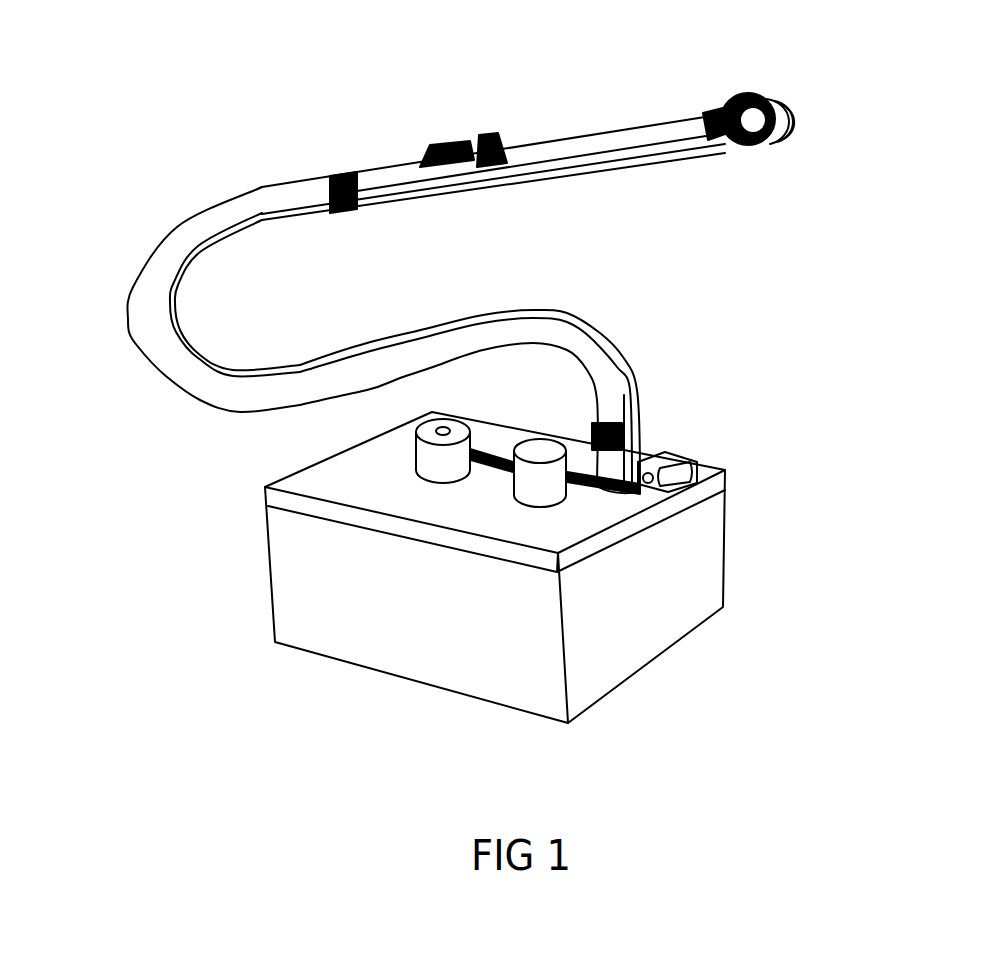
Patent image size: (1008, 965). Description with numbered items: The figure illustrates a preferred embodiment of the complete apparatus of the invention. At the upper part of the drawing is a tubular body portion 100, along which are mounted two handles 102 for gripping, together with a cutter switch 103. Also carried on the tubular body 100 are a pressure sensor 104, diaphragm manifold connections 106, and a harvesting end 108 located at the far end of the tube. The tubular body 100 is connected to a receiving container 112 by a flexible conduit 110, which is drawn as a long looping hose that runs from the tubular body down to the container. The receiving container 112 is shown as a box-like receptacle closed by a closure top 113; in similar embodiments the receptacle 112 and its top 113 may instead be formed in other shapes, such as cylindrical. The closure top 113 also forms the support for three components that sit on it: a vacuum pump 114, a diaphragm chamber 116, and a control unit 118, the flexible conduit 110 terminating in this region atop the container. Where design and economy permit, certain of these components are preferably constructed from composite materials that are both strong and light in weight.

The tubular body portion 100 is at (613, 130).
The handles 102 is at (437, 145).
The cutter switch 103 is at (490, 155).
The pressure sensor 104 is at (707, 110).
The diaphragm manifold connections 106 is at (740, 95).
The harvesting end 108 is at (781, 142).
The flexible conduit 110 is at (133, 342).
The receiving container 112 is at (268, 578).
The closure top 113 is at (283, 477).
The vacuum pump 114 is at (415, 452).
The diaphragm chamber 116 is at (538, 442).
The control unit 118 is at (672, 453).